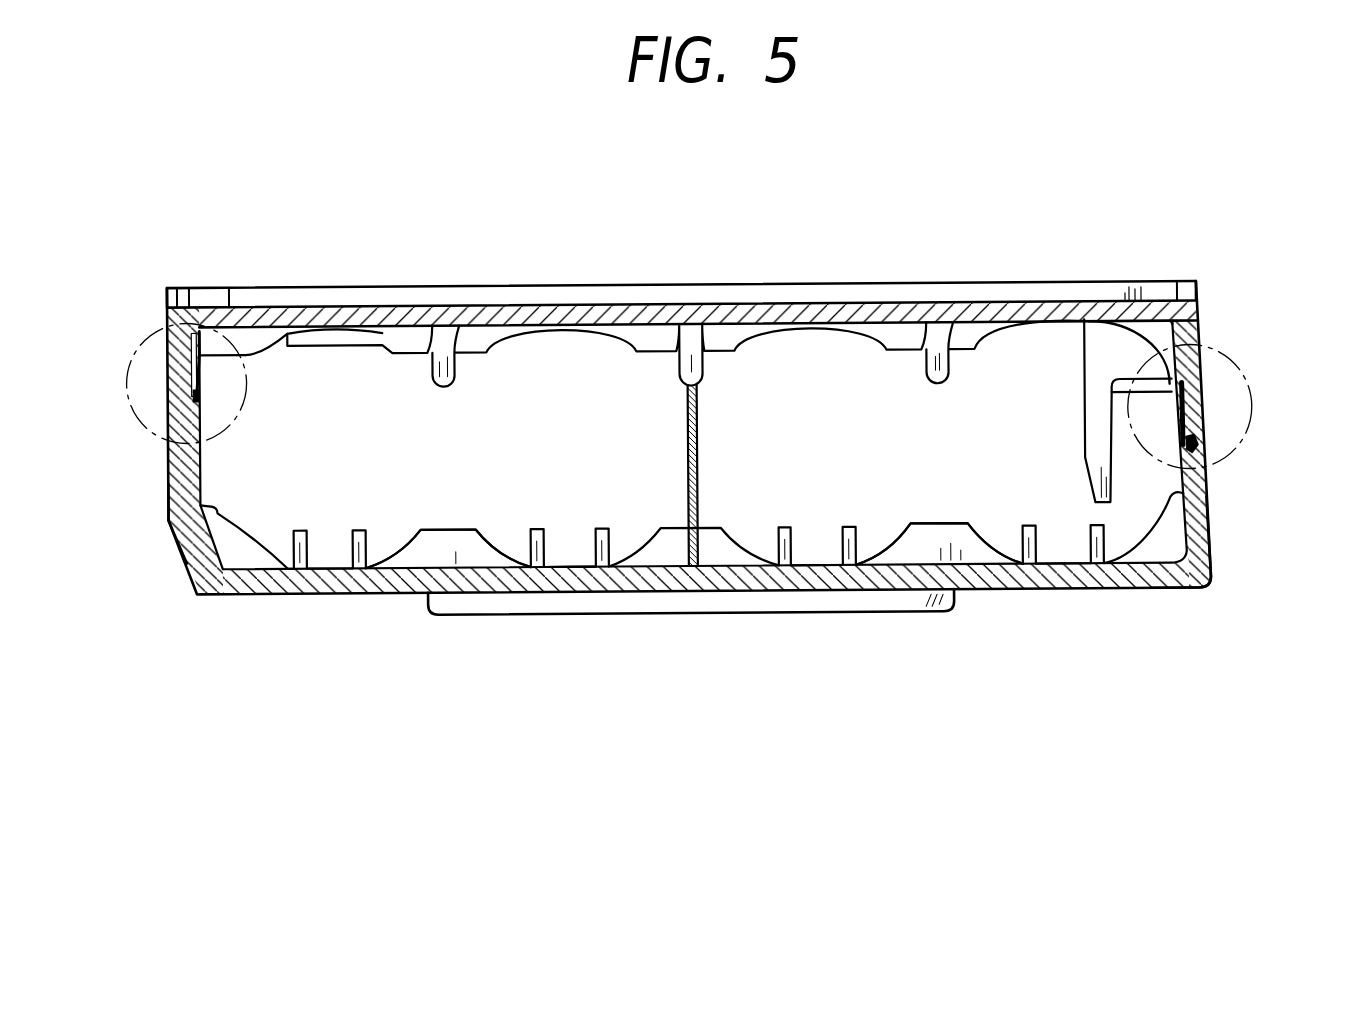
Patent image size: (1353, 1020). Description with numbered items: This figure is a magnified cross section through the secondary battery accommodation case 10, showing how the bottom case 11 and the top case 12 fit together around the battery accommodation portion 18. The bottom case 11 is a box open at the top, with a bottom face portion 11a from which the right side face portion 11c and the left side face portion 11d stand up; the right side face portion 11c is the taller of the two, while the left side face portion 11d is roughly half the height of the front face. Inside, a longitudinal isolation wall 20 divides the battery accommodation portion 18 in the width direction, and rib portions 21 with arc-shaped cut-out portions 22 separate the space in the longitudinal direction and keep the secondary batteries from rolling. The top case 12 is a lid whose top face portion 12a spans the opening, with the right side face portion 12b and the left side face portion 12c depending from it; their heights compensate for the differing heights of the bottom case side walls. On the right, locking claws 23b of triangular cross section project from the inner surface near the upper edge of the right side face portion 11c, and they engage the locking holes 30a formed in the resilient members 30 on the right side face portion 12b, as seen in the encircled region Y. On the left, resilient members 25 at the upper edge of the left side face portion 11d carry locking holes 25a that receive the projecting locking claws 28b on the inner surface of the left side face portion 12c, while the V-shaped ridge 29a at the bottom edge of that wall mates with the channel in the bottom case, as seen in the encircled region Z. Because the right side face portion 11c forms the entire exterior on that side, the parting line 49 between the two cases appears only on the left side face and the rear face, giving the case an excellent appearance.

The secondary battery accommodation case 10 is at (287, 196).
The bottom case 11 is at (177, 302).
The bottom face portion 11a is at (661, 592).
The right side face portion 11c is at (176, 496).
The left side face portion 11d is at (1203, 538).
The top case 12 is at (263, 300).
The top face portion 12a is at (650, 322).
The right side face portion 12b is at (172, 346).
The left side face portion 12c is at (1203, 368).
The battery accommodation portion 18 is at (540, 451).
The longitudinal isolation wall 20 is at (699, 452).
The rib portion 21 is at (452, 540).
The arc-shaped cut-out portion 22 is at (975, 540).
The locking claw 23b is at (193, 398).
The resilient member 25 is at (1112, 397).
The locking hole 25a is at (1178, 406).
The locking claw 28b is at (1190, 398).
The V-shaped ridge 29a is at (1200, 460).
The resilient member 30 is at (198, 402).
The locking hole 30a is at (204, 392).
The parting line 49 is at (1195, 426).
The detail region Y is at (127, 381).
The detail region Z is at (1256, 412).